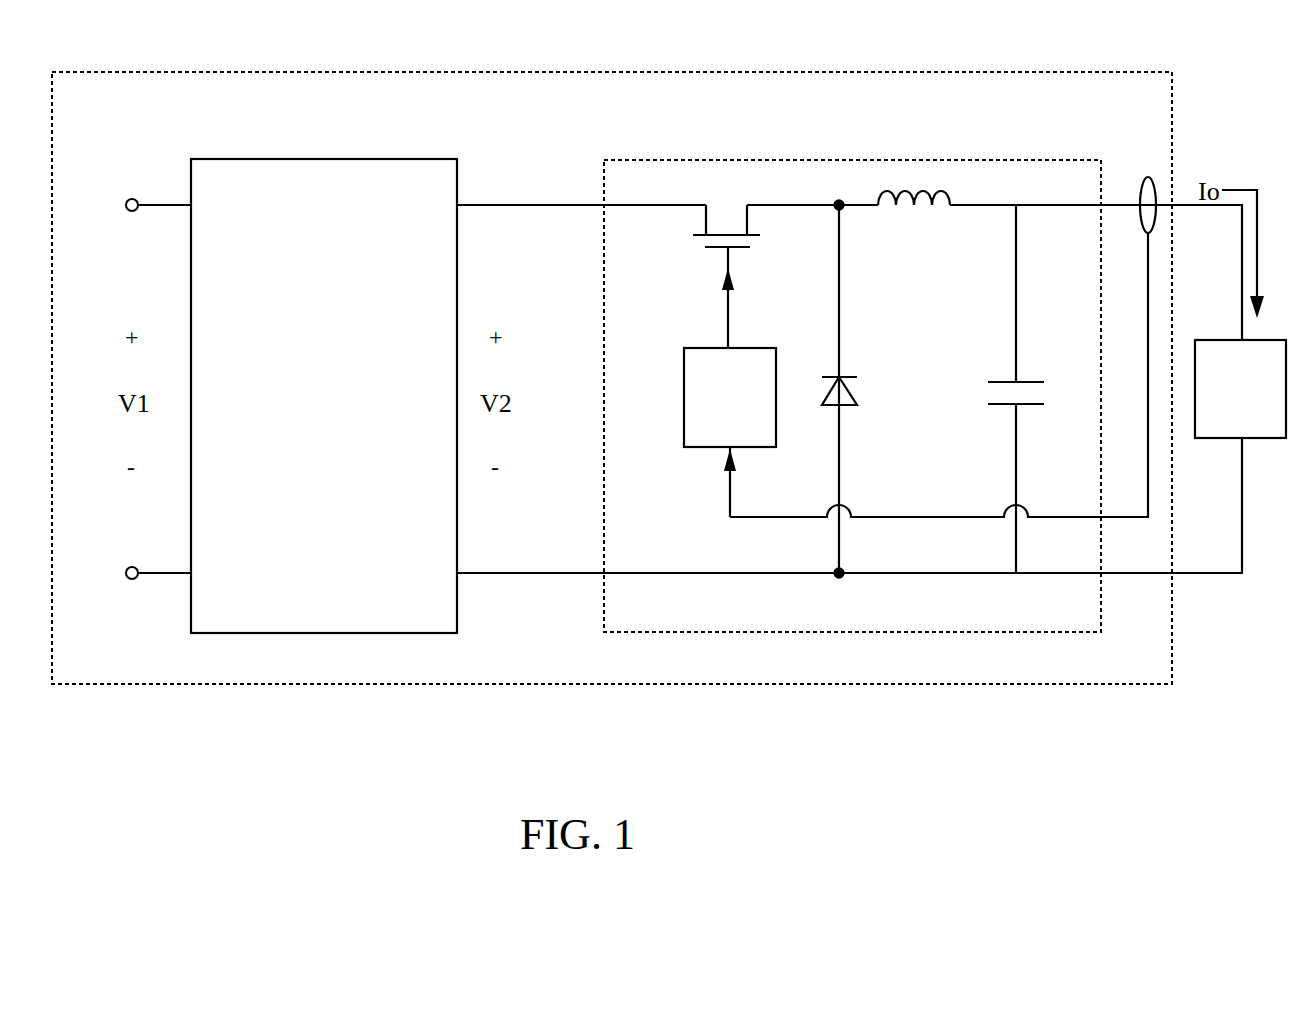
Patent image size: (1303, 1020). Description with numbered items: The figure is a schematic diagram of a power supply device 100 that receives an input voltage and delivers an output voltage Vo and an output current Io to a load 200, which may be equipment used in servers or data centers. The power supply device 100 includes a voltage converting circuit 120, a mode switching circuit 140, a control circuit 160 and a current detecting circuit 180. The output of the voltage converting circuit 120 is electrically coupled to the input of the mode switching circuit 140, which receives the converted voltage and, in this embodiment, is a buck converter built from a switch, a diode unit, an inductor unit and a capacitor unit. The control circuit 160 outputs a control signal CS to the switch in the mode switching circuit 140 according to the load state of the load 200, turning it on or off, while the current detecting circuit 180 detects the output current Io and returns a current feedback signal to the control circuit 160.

The power supply device 100 is at (553, 72).
The voltage converting circuit 120 is at (324, 396).
The mode switching circuit 140 is at (790, 160).
The control circuit 160 is at (730, 397).
The current detecting circuit 180 is at (1153, 178).
The load 200 is at (1240, 389).